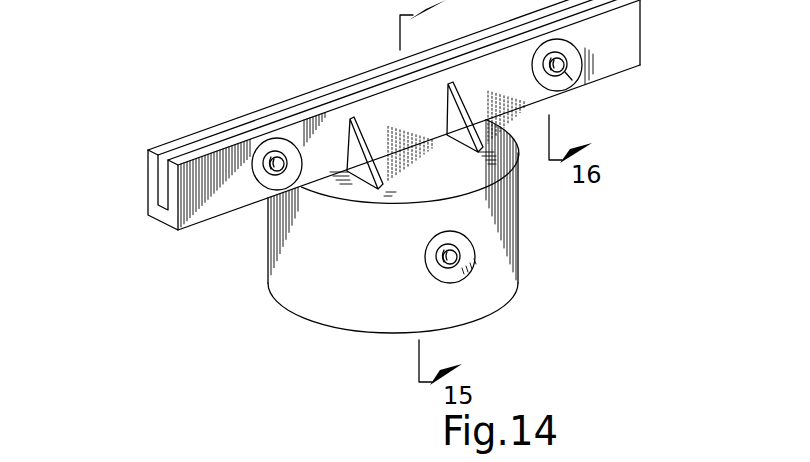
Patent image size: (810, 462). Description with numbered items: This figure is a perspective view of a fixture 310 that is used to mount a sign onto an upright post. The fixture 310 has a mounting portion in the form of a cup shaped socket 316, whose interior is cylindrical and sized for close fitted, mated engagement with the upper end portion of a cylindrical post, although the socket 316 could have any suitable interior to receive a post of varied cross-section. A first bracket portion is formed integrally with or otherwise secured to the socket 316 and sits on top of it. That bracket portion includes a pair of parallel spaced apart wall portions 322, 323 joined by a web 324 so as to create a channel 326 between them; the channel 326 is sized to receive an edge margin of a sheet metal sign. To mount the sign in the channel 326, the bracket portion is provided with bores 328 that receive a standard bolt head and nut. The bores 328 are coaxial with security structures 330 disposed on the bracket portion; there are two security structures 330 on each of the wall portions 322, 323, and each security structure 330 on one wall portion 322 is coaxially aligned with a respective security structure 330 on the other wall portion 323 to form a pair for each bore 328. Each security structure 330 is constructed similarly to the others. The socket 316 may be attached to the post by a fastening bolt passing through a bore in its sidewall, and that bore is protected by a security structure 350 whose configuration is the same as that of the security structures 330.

The fixture 310 is at (380, 166).
The cup shaped socket 316 is at (448, 227).
The wall portion 322 is at (380, 152).
The wall portion 323 is at (240, 120).
The web 324 is at (152, 217).
The channel 326 is at (290, 105).
The bore 328 is at (272, 190).
The security structure 330 is at (284, 173).
The security structure 350 is at (463, 265).